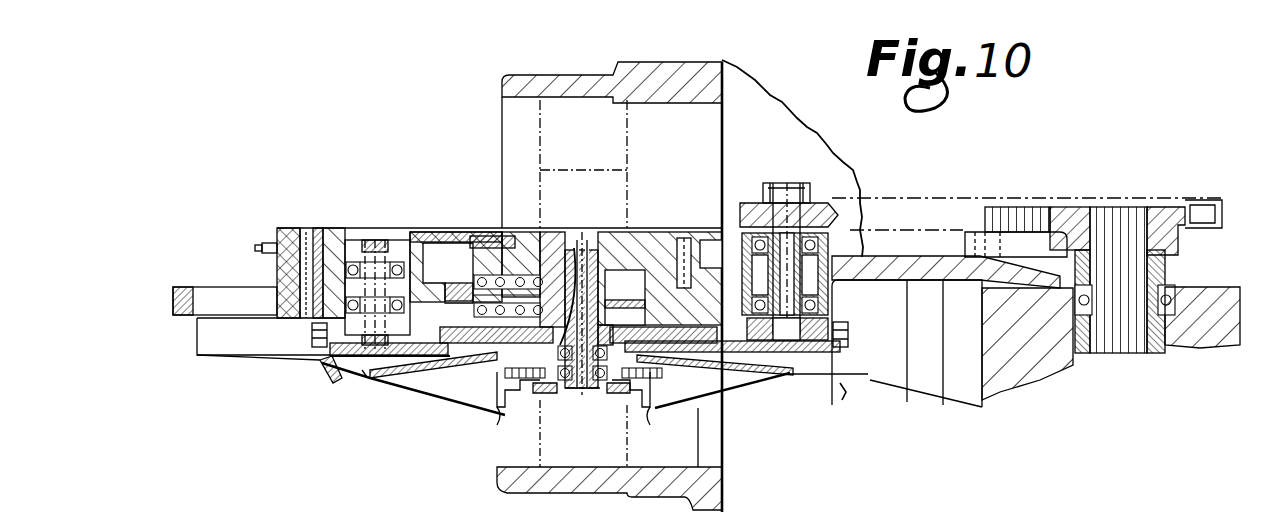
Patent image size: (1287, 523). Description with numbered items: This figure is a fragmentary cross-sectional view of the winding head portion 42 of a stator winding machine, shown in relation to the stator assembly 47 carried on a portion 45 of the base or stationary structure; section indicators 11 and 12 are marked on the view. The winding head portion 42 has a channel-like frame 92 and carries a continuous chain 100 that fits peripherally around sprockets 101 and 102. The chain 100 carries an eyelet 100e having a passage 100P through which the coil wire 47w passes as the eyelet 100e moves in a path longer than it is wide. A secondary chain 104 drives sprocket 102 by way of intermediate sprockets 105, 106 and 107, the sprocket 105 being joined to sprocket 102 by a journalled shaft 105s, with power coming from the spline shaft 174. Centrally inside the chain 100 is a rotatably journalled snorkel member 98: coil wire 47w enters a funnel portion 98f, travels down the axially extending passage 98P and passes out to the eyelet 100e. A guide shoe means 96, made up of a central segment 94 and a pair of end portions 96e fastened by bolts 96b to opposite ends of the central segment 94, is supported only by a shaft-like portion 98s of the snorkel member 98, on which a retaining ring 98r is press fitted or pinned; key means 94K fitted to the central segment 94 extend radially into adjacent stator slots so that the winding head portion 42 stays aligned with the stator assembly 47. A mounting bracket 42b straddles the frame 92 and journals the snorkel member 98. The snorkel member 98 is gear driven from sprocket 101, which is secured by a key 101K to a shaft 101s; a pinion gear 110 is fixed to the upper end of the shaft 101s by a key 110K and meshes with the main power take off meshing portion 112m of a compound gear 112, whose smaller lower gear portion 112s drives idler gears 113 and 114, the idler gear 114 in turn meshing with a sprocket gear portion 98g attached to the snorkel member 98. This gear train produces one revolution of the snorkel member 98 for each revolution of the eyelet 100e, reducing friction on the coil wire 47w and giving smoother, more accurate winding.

The section line 11- 11 is at (355, 390).
The direction arrow 12 is at (455, 182).
The winding head portion 42 is at (277, 280).
The mounting bracket 42b is at (486, 228).
The portion of base or stationary structure 45 is at (717, 56).
The stator assembly 47 is at (526, 102).
The coil wire 47w is at (583, 240).
The channel-like frame 92 is at (213, 297).
The central segment 94 is at (583, 400).
The key means 94K is at (500, 398).
The guide shoe means 96 is at (698, 398).
The bolts 96b is at (447, 410).
The end portions 96e is at (430, 385).
The snorkel member 98 is at (638, 232).
The funnel portion 98f is at (596, 245).
The sprocket gear portion 98g is at (645, 240).
The passage 98P is at (655, 245).
The retaining ring 98r is at (552, 400).
The shaft-like portion 98s is at (600, 385).
The chain 100 is at (245, 357).
The passage 100P is at (330, 367).
The eyelet 100e is at (310, 363).
The sprocket 101 is at (300, 317).
The key 101K is at (313, 340).
The shaft 101s is at (278, 242).
The sprocket 102 is at (828, 324).
The secondary chain 104 is at (1210, 200).
The intermediate sprocket 105 is at (842, 215).
The journalled shaft 105s is at (1028, 227).
The intermediate sprocket 106 is at (1022, 208).
The intermediate sprocket 107 is at (1173, 208).
The pinion gear 110 is at (345, 262).
The key 110K is at (378, 250).
The compound gear 112 is at (447, 233).
The main power take off meshing portion 112m is at (412, 232).
The smaller lower gear portion 112s is at (330, 377).
The idler gear 113 is at (503, 232).
The idler gear 114 is at (528, 232).
The spline shaft 174 is at (1132, 340).